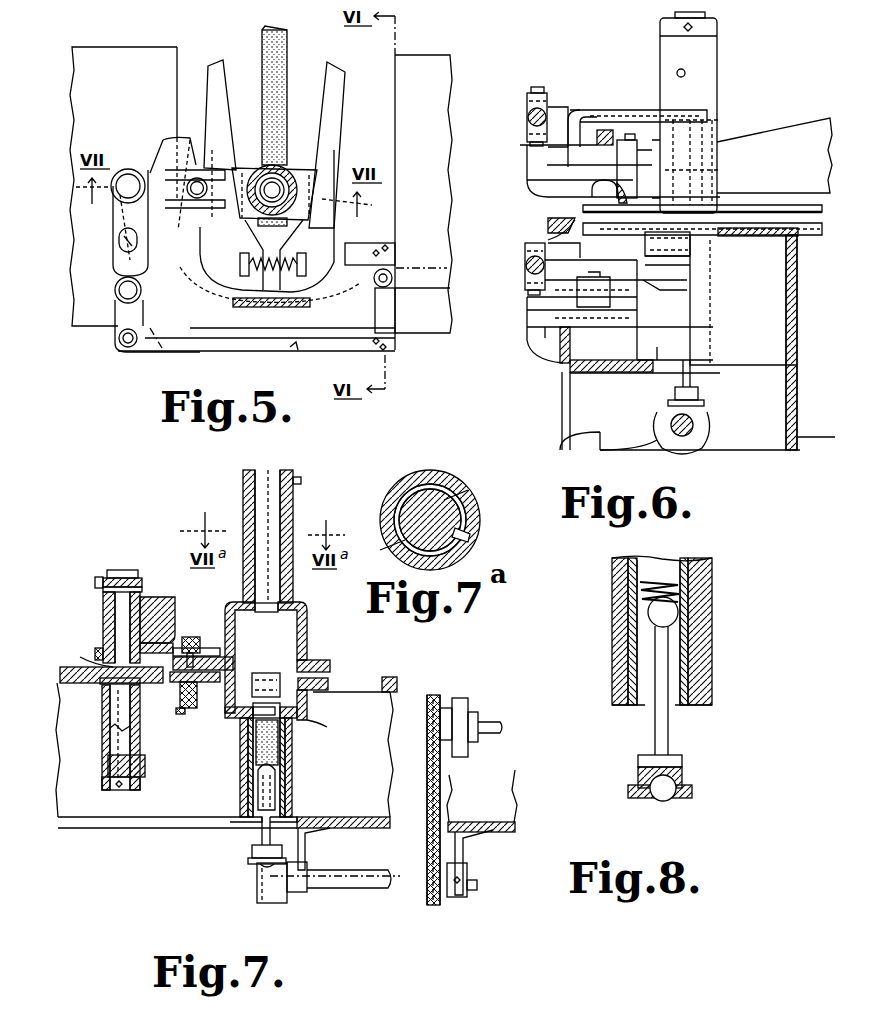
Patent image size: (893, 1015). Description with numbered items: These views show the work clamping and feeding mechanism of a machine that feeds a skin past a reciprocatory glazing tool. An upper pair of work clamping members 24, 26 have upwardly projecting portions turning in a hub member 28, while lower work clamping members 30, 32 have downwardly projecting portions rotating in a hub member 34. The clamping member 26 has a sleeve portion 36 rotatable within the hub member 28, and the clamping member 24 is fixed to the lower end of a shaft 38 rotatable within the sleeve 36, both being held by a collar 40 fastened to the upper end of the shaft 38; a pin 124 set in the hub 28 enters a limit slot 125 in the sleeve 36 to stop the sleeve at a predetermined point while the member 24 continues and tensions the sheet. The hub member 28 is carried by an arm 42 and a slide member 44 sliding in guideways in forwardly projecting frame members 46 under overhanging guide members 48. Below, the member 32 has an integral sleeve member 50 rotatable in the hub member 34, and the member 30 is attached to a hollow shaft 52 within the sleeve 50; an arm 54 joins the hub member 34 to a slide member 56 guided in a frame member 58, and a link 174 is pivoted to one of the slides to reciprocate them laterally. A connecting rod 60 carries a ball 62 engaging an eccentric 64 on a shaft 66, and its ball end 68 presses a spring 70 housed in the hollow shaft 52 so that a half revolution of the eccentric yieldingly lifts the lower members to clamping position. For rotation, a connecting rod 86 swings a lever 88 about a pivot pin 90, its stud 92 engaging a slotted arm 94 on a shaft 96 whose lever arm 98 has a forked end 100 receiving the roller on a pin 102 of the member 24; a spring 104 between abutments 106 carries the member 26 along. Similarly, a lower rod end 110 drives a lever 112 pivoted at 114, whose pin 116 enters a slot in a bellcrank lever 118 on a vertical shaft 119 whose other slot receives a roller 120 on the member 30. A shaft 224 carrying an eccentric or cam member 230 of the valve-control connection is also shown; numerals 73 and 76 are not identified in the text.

In FIG. 5, the work clamping member 24 is at (212, 92).
In FIG. 7, the work clamping member 24 is at (233, 663).
In FIG. 5, the work clamping member 26 is at (338, 96).
In FIG. 6, the work clamping member 26 is at (756, 205).
In FIG. 7, the work clamping member 26 is at (326, 672).
In FIG. 5, the hub member 28 is at (283, 178).
In FIG. 6, the hub member 28 is at (660, 53).
In FIG. 7, the hub member 28 is at (245, 506).
In FIG. 7A, the hub member 28 is at (468, 503).
In FIG. 7, the work clamping member 30 is at (205, 690).
In FIG. 6, the work clamping member 32 is at (760, 238).
In FIG. 7, the work clamping member 32 is at (318, 700).
In FIG. 6, the hub member 34 is at (697, 342).
In FIG. 7, the hub member 34 is at (292, 756).
In FIG. 8, the hub member 34 is at (713, 656).
In FIG. 7, the sleeve portion 36 is at (293, 580).
In FIG. 7A, the sleeve portion 36 is at (398, 504).
In FIG. 7, the shaft 38 is at (256, 577).
In FIG. 7A, the shaft 38 is at (413, 498).
In FIG. 7, the collar 40 is at (243, 474).
In FIG. 6, the arm 42 is at (617, 110).
In FIG. 5, the slide member 44 is at (370, 308).
In FIG. 6, the slide member 44 is at (545, 159).
In FIG. 5, the frame members 46 is at (164, 137).
In FIG. 6, the frame members 46 is at (796, 128).
In FIG. 7, the frame members 46 is at (175, 610).
In FIG. 5, the guide members 48 is at (366, 243).
In FIG. 6, the guide members 48 is at (634, 130).
In FIG. 7, the sleeve member 50 is at (292, 786).
In FIG. 8, the sleeve member 50 is at (688, 680).
In FIG. 7, the hollow shaft 52 is at (241, 728).
In FIG. 8, the hollow shaft 52 is at (684, 576).
In FIG. 6, the arm 54 is at (648, 298).
In FIG. 6, the slide member 56 is at (535, 305).
In FIG. 6, the frame member 58 is at (530, 318).
In FIG. 6, the connecting rod 60 is at (683, 380).
In FIG. 7, the connecting rod 60 is at (255, 836).
In FIG. 8, the connecting rod 60 is at (662, 731).
In FIG. 6, the ball 62 is at (699, 410).
In FIG. 7, the ball 62 is at (255, 862).
In FIG. 8, the ball 62 is at (663, 801).
In FIG. 6, the eccentric 64 is at (671, 422).
In FIG. 7, the eccentric 64 is at (275, 903).
In FIG. 6, the shaft 66 is at (707, 424).
In FIG. 7, the shaft 66 is at (332, 885).
In FIG. 7, the ball end 68 is at (242, 766).
In FIG. 8, the ball end 68 is at (672, 610).
In FIG. 7, the spring 70 is at (300, 735).
In FIG. 8, the spring 70 is at (648, 591).
In FIG. 5, the plate 73 is at (156, 52).
In FIG. 5, the bar 76 is at (287, 48).
In FIG. 7, the bar 76 is at (277, 673).
In FIG. 5, the connecting rod 86 is at (215, 345).
In FIG. 6, the connecting rod 86 is at (528, 115).
In FIG. 5, the lever 88 is at (118, 312).
In FIG. 6, the lever 88 is at (556, 113).
In FIG. 5, the pivot pin 90 is at (115, 290).
In FIG. 6, the pivot pin 90 is at (577, 108).
In FIG. 5, the stud 92 is at (120, 241).
In FIG. 5, the arm 94 is at (113, 219).
In FIG. 6, the arm 94 is at (637, 150).
In FIG. 7, the arm 94 is at (142, 583).
In FIG. 5, the shaft 96 is at (126, 183).
In FIG. 6, the shaft 96 is at (708, 118).
In FIG. 7, the shaft 96 is at (116, 614).
In FIG. 7, the lever arm 98 is at (92, 655).
In FIG. 5, the forked end 100 is at (214, 171).
In FIG. 7, the forked end 100 is at (213, 650).
In FIG. 5, the pin 102 is at (197, 192).
In FIG. 7, the pin 102 is at (191, 645).
In FIG. 5, the spring 104 is at (322, 285).
In FIG. 5, the abutments 106 is at (243, 253).
In FIG. 6, the abutments 106 is at (596, 196).
In FIG. 6, the left-hand end 110 is at (527, 267).
In FIG. 6, the lever 112 is at (552, 240).
In FIG. 6, the pivot 114 is at (548, 224).
In FIG. 6, the pin 116 is at (705, 268).
In FIG. 6, the bellcrank lever 118 is at (705, 250).
In FIG. 7, the bellcrank lever 118 is at (148, 683).
In FIG. 7, the vertical shaft 119 is at (116, 705).
In FIG. 7, the roller 120 is at (180, 708).
In FIG. 7, the pin 124 is at (296, 530).
In FIG. 7A, the pin 124 is at (468, 532).
In FIG. 7A, the limit slot 125 is at (458, 541).
In FIG. 5, the link 174 is at (432, 268).
In FIG. 7, the shaft 224 is at (498, 724).
In FIG. 7, the eccentric or cam member 230 is at (460, 700).